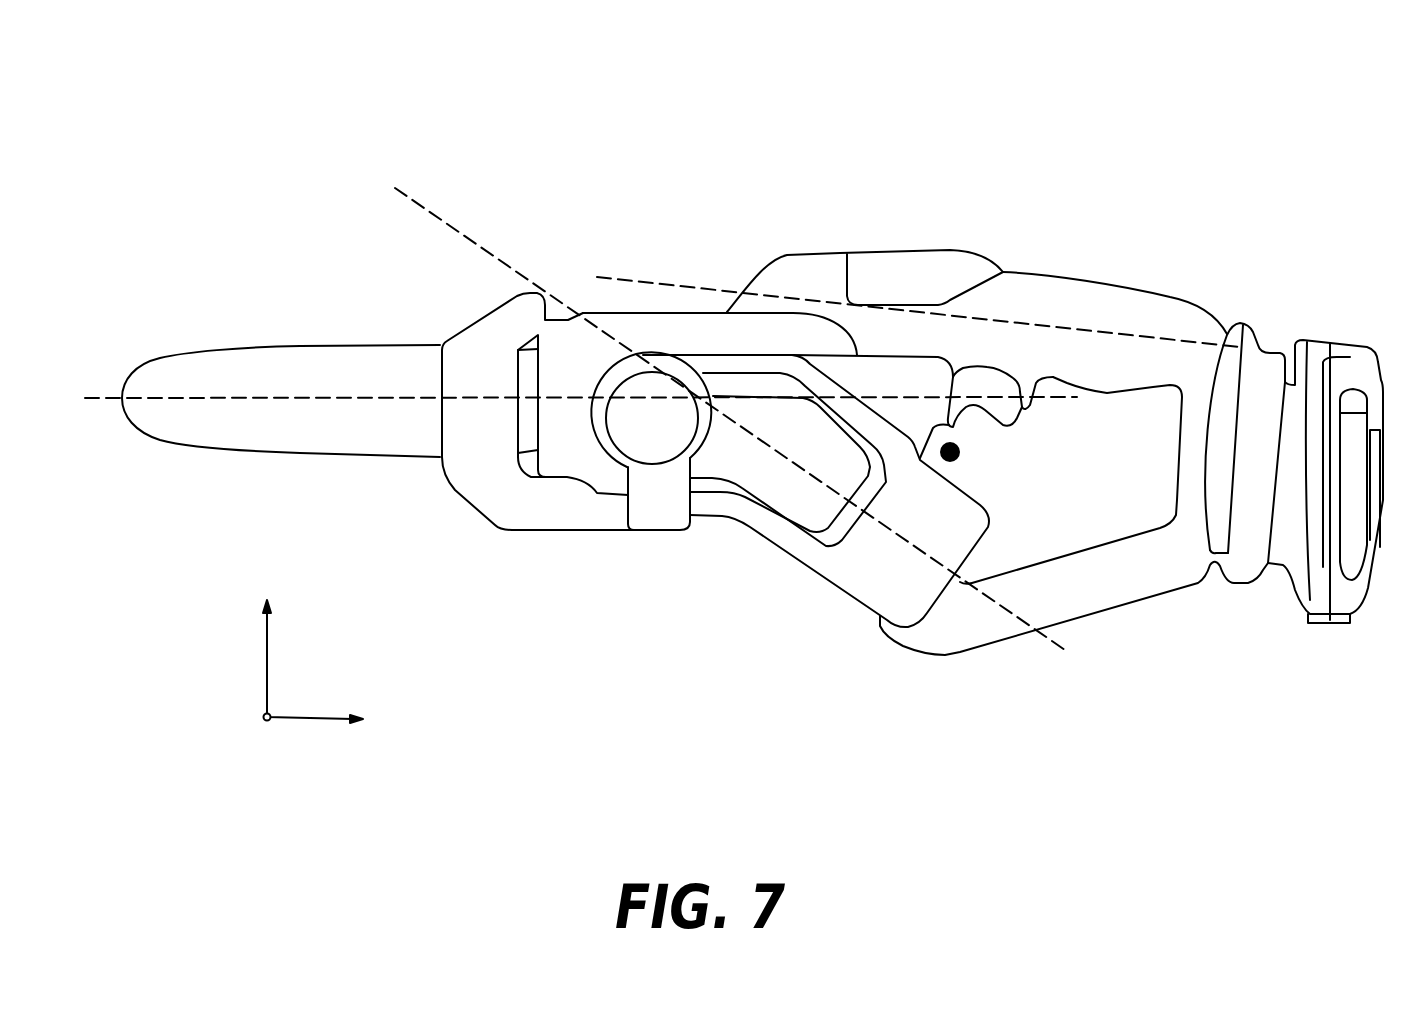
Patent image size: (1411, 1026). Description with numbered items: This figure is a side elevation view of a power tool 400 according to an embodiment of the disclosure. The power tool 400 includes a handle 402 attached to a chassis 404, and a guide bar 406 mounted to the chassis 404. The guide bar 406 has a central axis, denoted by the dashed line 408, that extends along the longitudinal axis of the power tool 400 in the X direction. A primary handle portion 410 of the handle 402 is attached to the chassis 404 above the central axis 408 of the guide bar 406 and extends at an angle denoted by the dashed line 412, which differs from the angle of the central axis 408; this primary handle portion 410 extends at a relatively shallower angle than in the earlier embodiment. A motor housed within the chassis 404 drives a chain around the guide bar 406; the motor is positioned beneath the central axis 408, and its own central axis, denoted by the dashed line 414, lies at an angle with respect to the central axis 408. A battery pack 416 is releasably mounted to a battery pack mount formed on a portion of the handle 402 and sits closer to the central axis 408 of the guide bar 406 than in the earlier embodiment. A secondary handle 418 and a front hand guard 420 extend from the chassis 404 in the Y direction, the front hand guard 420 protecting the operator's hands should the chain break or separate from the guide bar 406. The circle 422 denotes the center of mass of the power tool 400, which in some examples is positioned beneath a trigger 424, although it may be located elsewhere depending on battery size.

The power tool 400 is at (731, 34).
The handle 402 is at (1113, 235).
The chassis 404 is at (827, 577).
The guide bar 406 is at (302, 442).
The central axis of the guide bar 408 is at (275, 398).
The primary handle portion 410 is at (1177, 296).
The angle of the primary handle portion 412 is at (793, 295).
The central axis of the motor 414 is at (1017, 617).
The battery pack 416 is at (1357, 347).
The secondary handle 418 is at (630, 458).
The front hand guard 420 is at (472, 495).
The circle denoting center of mass 422 is at (960, 454).
The trigger 424 is at (1008, 377).